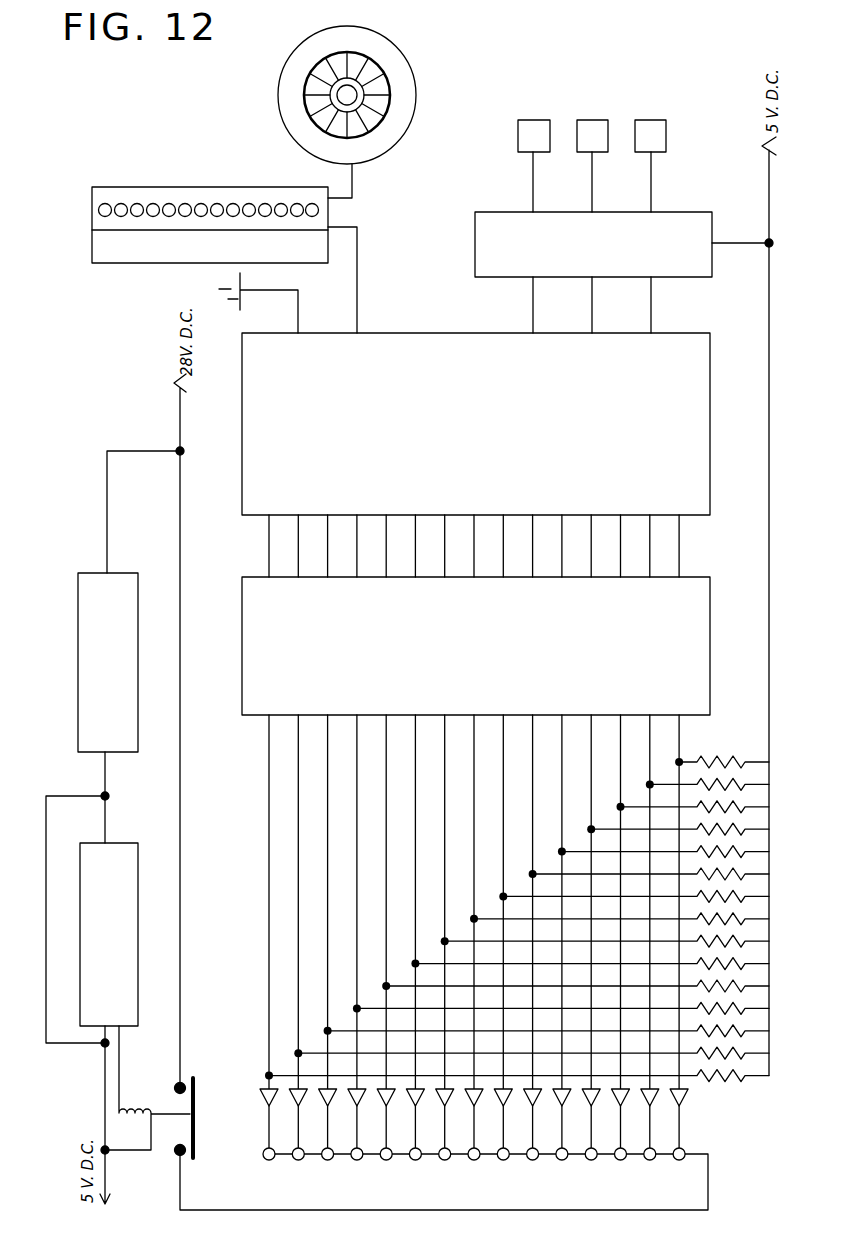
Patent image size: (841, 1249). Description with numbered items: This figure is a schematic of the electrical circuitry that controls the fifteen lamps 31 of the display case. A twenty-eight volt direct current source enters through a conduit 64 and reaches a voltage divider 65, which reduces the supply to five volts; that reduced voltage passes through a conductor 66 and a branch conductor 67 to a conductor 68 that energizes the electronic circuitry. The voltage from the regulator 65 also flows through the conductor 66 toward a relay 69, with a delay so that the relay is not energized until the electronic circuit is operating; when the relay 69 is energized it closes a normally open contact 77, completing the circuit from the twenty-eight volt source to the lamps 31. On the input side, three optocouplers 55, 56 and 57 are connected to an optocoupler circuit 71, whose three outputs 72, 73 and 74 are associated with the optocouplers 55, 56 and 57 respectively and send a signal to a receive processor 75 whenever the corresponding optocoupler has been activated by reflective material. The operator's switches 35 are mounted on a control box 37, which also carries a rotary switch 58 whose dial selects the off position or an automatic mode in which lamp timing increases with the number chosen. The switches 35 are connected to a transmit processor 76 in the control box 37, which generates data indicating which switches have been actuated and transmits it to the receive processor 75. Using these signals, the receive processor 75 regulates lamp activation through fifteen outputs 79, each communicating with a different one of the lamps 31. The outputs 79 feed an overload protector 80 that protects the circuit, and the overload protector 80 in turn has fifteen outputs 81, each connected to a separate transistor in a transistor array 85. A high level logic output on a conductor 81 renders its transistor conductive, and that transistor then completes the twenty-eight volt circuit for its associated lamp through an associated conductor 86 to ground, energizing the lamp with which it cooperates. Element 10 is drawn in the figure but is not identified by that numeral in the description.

The indicator lamp 10 is at (122, 901).
The lamps 31 is at (636, 1193).
The switches 35 is at (176, 170).
The control box 37 is at (88, 253).
The optocoupler 55 is at (651, 127).
The optocoupler 56 is at (592, 128).
The optocoupler 57 is at (530, 128).
The rotary switch 58 is at (382, 39).
The conduit 64 is at (118, 449).
The voltage divider 65 is at (128, 613).
The conductor 66 is at (108, 773).
The branch conductor 67 is at (47, 878).
The conductor 68 is at (105, 1067).
The relay 69 is at (134, 1104).
The optocoupler circuit 71 is at (683, 212).
The output 72 is at (651, 302).
The output 73 is at (593, 293).
The output 74 is at (533, 313).
The receive processor 75 is at (710, 412).
The transmit processor 76 is at (324, 247).
The contact 77 is at (197, 1104).
The outputs 79 is at (690, 553).
The overload protector 80 is at (685, 620).
The outputs 81 is at (692, 740).
The transistor array 85 is at (700, 1108).
The conductor 86 is at (258, 846).